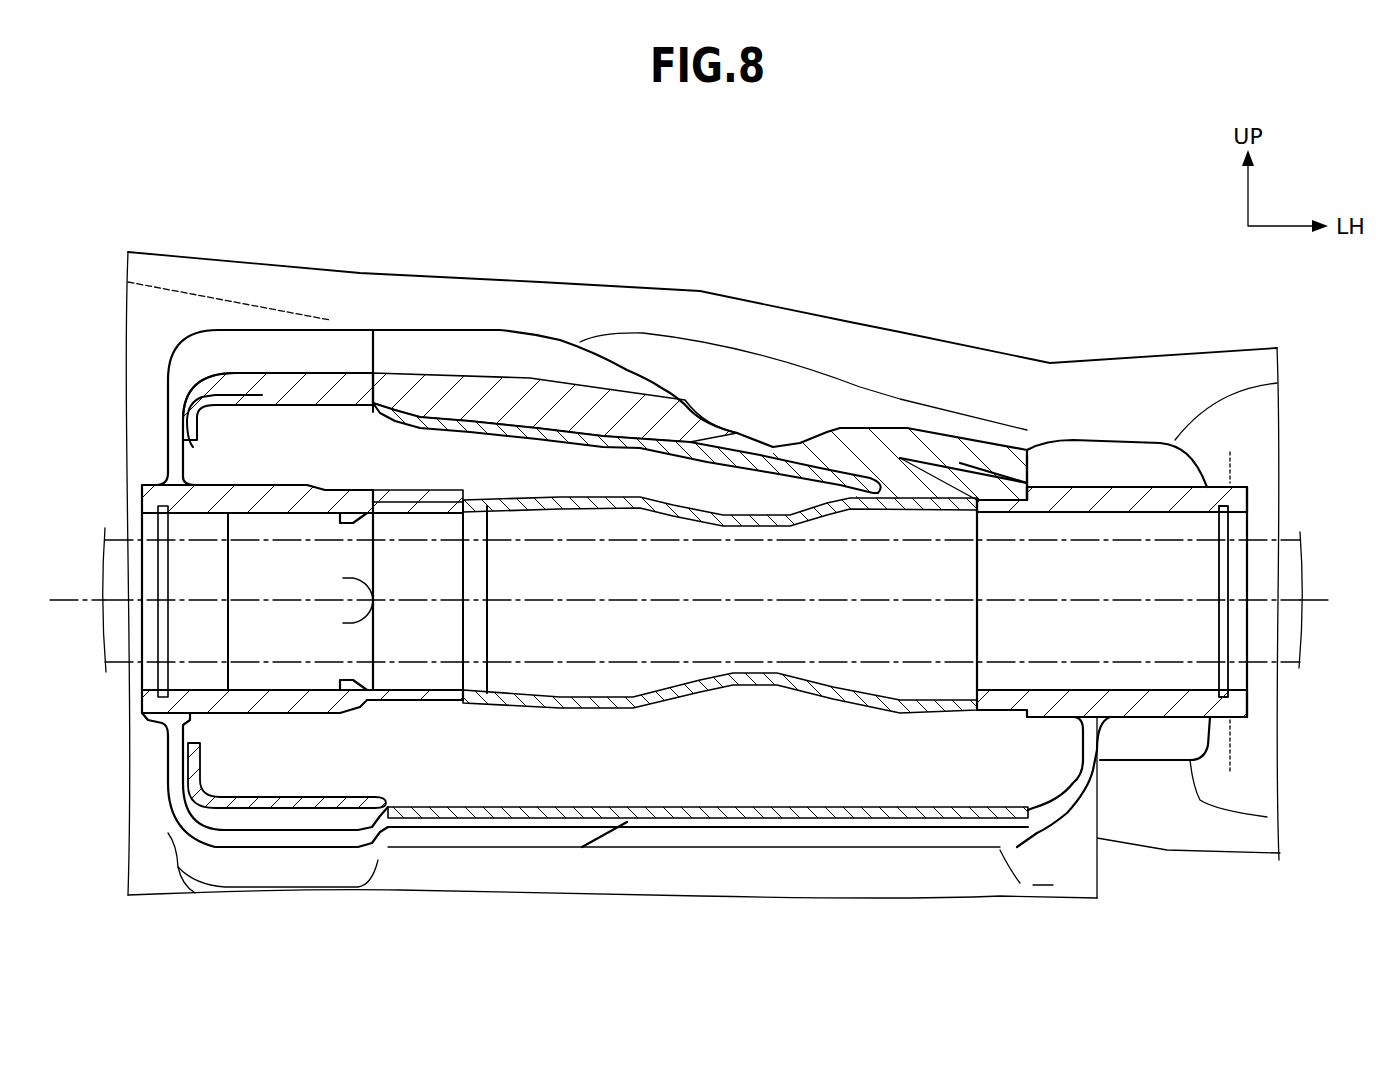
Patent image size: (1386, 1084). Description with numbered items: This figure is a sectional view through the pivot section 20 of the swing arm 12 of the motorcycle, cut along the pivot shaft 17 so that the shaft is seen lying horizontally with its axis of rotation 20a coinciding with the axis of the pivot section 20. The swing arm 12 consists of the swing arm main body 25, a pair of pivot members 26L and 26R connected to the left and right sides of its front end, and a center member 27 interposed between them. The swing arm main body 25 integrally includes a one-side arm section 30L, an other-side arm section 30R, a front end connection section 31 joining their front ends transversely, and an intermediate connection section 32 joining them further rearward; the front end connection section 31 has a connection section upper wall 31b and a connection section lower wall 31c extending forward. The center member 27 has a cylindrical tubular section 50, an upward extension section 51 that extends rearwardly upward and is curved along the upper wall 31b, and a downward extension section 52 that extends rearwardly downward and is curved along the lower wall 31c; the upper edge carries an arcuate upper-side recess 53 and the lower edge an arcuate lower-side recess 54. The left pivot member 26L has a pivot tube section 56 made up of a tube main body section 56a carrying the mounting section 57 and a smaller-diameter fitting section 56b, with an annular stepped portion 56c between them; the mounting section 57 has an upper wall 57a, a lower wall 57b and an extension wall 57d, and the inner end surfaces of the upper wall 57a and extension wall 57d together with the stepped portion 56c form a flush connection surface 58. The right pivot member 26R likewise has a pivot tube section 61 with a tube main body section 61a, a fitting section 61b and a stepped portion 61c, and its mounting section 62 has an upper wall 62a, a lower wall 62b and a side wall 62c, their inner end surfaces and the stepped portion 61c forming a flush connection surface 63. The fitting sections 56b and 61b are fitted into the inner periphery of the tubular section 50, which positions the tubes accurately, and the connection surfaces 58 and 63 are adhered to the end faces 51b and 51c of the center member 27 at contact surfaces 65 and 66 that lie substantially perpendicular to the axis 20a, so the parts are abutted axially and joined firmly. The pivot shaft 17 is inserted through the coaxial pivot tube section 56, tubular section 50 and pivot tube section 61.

The swing arm 12 is at (470, 265).
The swing arm main body 25 is at (505, 267).
The pivot shaft 17 is at (1212, 672).
The pivot section 20 is at (1105, 425).
The axis of rotation 20a is at (1281, 603).
The pivot member 26R is at (157, 377).
The pivot member 26L is at (1262, 493).
The center member 27 is at (606, 376).
The other-side arm section 30R is at (235, 313).
The one-side arm section 30L is at (1210, 441).
The front end connection section 31 is at (816, 834).
The connection section upper wall 31b is at (578, 438).
The connection section lower wall 31c is at (720, 822).
The intermediate connection section 32 is at (752, 313).
The tubular section 50 is at (767, 512).
The upward extension section 51 is at (657, 405).
The end face 51b is at (1053, 463).
The end face 51c is at (365, 394).
The downward extension section 52 is at (572, 838).
The upper-side recess 53 is at (715, 430).
The lower-side recess 54 is at (627, 826).
The pivot tube section 56 is at (1094, 829).
The tube main body section 56a is at (1164, 700).
The fitting section 56b is at (1013, 722).
The stepped portion 56c is at (1020, 735).
The mounting section 57 is at (1128, 518).
The upper wall 57a is at (1127, 463).
The lower wall 57b is at (1140, 748).
The extension wall 57d is at (1063, 836).
The connection surface 58 is at (1012, 478).
The pivot tube section 61 is at (524, 721).
The tube main body section 61a is at (265, 713).
The fitting section 61b is at (426, 808).
The stepped portion 61c is at (374, 832).
The mounting section 62 is at (378, 334).
The upper wall 62a is at (305, 382).
The lower wall 62b is at (292, 813).
The side wall 62c is at (180, 430).
The connection surface 63 is at (390, 376).
The contact surface 65 is at (1042, 466).
The contact surface 66 is at (357, 330).